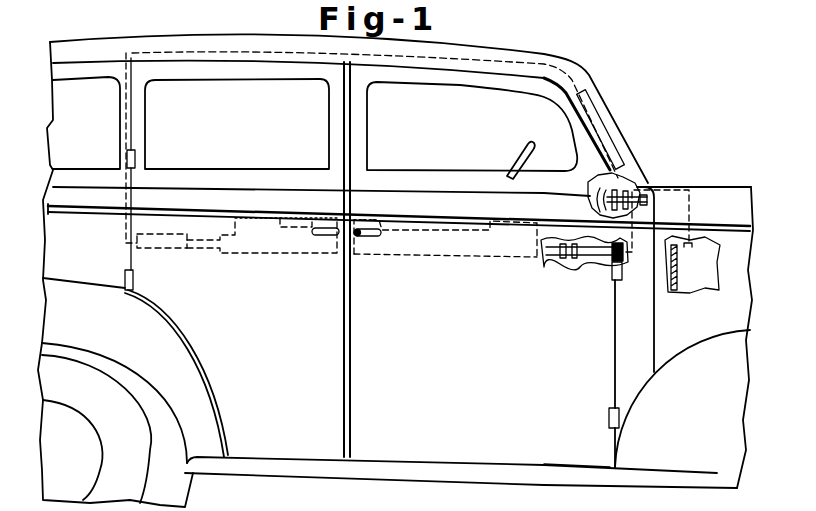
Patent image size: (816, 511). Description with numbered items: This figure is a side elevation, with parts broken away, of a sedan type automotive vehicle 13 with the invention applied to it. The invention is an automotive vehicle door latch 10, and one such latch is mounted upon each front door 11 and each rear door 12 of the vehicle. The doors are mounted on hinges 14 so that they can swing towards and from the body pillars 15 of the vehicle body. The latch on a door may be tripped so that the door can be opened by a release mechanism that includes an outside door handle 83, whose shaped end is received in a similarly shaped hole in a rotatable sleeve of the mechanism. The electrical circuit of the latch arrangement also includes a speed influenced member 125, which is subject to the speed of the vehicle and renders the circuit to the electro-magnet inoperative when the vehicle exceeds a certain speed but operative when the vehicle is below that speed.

The automotive vehicle door latch 10 is at (365, 250).
The front door 11 is at (397, 461).
The rear door 12 is at (307, 458).
The automotive vehicle 13 is at (590, 78).
The hinges 14 is at (137, 157).
The body pillars 15 is at (347, 138).
The outside door handle 83 is at (380, 233).
The speed influenced member 125 is at (641, 185).